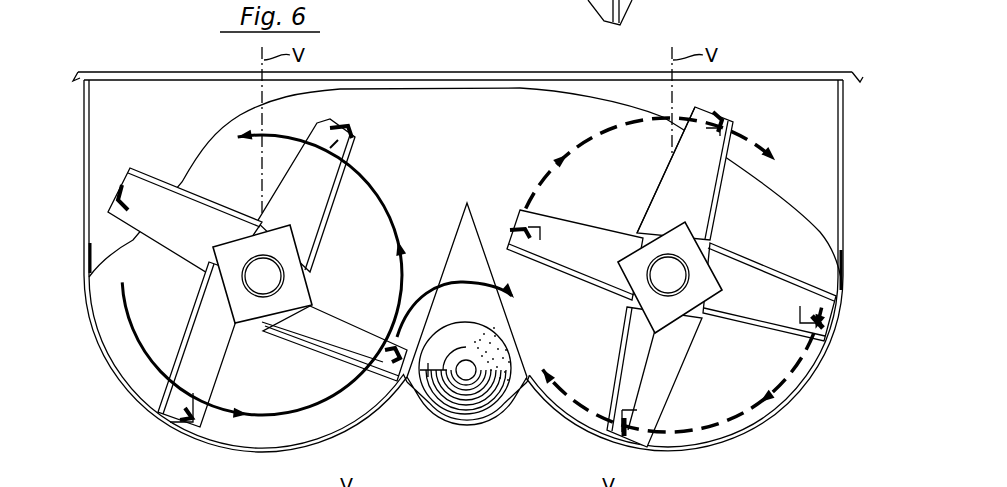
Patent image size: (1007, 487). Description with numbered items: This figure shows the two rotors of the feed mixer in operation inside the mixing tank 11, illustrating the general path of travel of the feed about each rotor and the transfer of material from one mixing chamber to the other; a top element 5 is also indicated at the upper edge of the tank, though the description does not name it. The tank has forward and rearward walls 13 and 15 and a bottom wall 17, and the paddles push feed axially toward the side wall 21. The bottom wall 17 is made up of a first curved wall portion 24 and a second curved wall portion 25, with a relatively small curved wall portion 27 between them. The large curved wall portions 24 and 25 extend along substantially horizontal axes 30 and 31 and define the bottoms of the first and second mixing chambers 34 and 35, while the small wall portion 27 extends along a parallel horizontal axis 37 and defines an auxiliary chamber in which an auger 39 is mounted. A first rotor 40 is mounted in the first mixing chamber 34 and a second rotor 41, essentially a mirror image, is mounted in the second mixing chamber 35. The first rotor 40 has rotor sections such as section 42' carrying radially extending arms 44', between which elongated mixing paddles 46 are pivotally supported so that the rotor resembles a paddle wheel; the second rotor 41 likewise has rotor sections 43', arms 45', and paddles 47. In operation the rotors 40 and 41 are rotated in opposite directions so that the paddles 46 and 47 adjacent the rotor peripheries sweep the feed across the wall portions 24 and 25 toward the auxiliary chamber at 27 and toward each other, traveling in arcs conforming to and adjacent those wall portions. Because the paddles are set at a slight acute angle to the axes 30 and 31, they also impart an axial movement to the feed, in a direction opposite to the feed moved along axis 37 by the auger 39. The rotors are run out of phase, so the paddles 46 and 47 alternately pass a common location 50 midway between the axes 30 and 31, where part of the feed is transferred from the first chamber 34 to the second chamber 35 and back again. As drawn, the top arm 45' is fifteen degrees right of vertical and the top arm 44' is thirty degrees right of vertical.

The top cover plate 5 is at (468, 72).
The mixing tank 11 is at (787, 48).
The forward wall 13 is at (85, 182).
The rearward wall 15 is at (846, 172).
The bottom wall 17 is at (132, 414).
The side wall 21 is at (170, 118).
The first curved wall portion 24 is at (180, 433).
The second curved wall portion 25 is at (722, 449).
The curved wall portion 27 is at (463, 428).
The horizontal axis 30 is at (264, 274).
The horizontal axis 31 is at (668, 276).
The first mixing chamber 34 is at (114, 128).
The second mixing chamber 35 is at (813, 126).
The horizontal axis 37 is at (468, 375).
The auger 39 is at (430, 357).
The rotor 40 is at (186, 284).
The rotor 41 is at (731, 237).
The second rotor section 42' is at (343, 202).
The rotor section 43' is at (646, 170).
The radially extending arm 44' is at (319, 195).
The radially extending arm 45' is at (665, 173).
The mixing paddle 46 is at (343, 127).
The mixing paddle 47 is at (719, 112).
The common location 50 is at (477, 275).